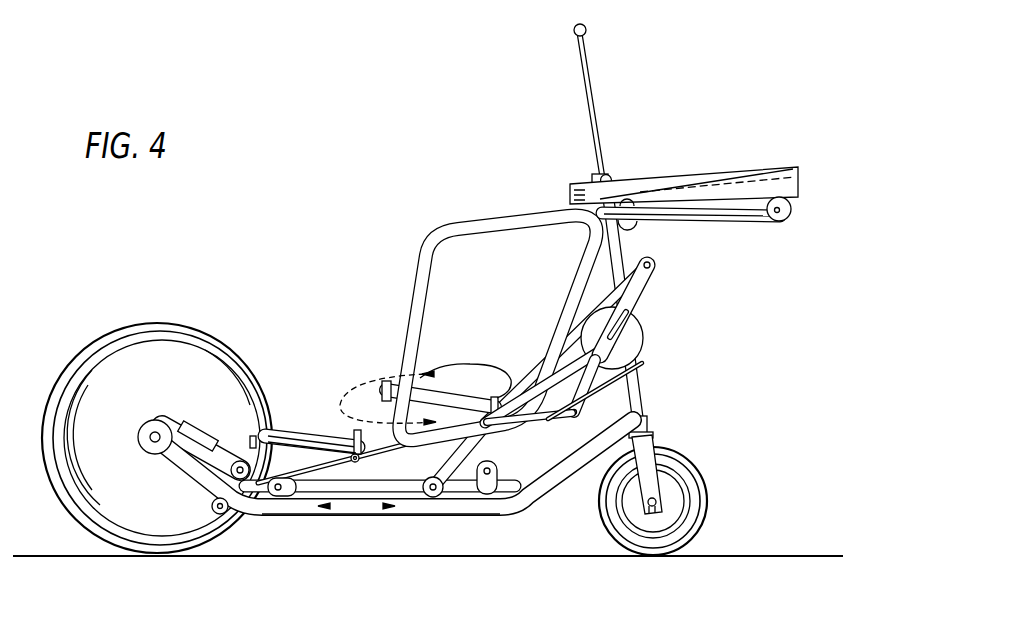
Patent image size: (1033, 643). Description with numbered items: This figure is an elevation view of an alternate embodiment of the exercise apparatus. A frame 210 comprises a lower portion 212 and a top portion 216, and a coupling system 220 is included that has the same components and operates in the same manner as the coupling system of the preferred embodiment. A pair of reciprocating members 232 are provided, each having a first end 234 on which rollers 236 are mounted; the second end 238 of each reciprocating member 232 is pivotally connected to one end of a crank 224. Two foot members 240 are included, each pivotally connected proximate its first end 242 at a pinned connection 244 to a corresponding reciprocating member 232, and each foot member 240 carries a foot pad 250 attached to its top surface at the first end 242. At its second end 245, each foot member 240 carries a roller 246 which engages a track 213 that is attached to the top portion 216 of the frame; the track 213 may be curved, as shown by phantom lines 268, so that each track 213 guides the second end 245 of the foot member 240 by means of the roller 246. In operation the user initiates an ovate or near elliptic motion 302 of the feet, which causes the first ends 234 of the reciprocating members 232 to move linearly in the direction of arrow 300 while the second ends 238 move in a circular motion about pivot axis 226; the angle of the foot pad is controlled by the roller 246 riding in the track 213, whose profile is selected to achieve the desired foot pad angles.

The frame 210 is at (590, 392).
The lower portion 212 is at (388, 516).
The track 213 is at (790, 188).
The top portion 216 is at (622, 247).
The coupling system 220 is at (612, 377).
The crank 224 is at (648, 298).
The pivot axis 226 is at (644, 330).
The reciprocating member 232 is at (517, 395).
The first end 234 is at (296, 496).
The roller 236 is at (272, 497).
The second end 238 is at (652, 270).
The foot member 240 is at (423, 275).
The first end 242 is at (412, 380).
The pinned connection 244 is at (355, 453).
The second end 245 is at (513, 218).
The roller 246 is at (630, 224).
The foot pad 250 is at (312, 436).
The phantom lines 268 is at (757, 170).
The arrow 300 is at (340, 516).
The ovate or near elliptic motion 302 is at (480, 372).